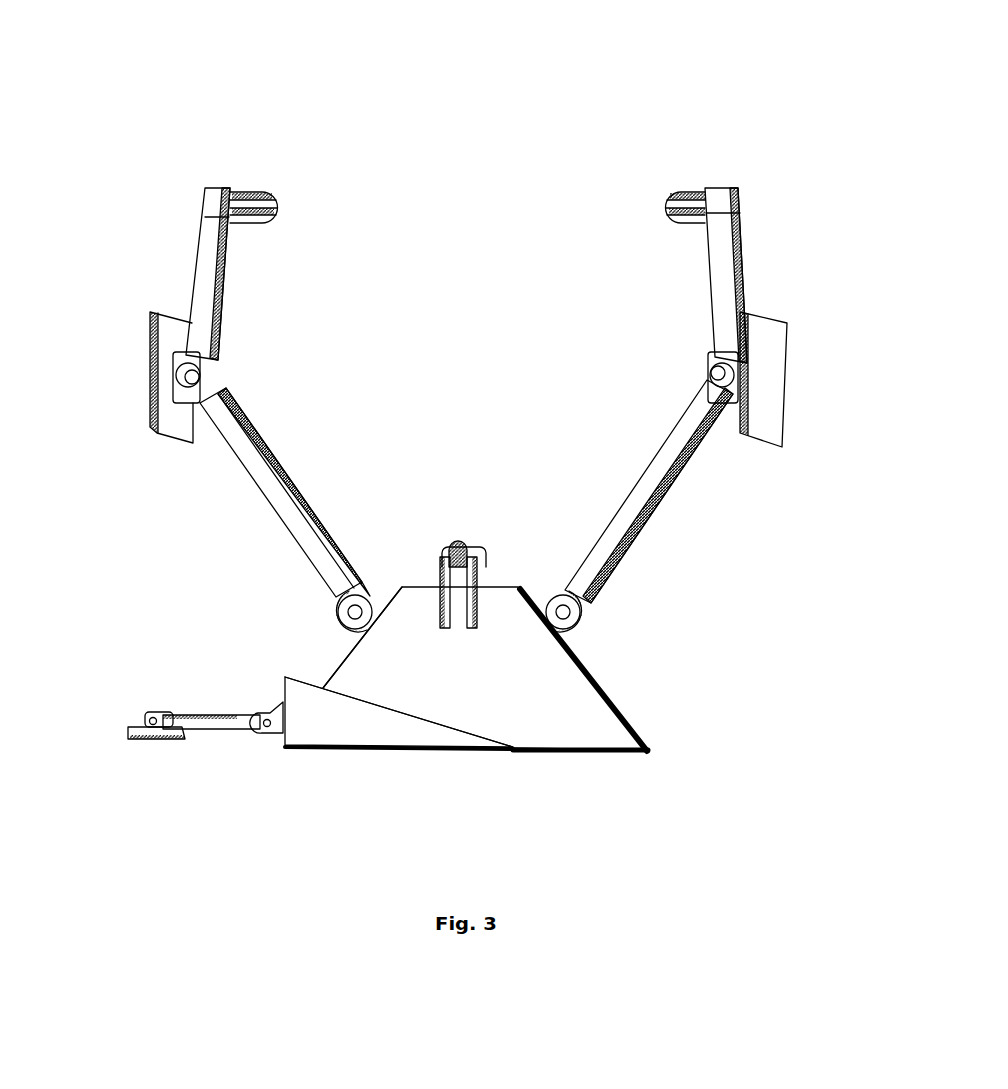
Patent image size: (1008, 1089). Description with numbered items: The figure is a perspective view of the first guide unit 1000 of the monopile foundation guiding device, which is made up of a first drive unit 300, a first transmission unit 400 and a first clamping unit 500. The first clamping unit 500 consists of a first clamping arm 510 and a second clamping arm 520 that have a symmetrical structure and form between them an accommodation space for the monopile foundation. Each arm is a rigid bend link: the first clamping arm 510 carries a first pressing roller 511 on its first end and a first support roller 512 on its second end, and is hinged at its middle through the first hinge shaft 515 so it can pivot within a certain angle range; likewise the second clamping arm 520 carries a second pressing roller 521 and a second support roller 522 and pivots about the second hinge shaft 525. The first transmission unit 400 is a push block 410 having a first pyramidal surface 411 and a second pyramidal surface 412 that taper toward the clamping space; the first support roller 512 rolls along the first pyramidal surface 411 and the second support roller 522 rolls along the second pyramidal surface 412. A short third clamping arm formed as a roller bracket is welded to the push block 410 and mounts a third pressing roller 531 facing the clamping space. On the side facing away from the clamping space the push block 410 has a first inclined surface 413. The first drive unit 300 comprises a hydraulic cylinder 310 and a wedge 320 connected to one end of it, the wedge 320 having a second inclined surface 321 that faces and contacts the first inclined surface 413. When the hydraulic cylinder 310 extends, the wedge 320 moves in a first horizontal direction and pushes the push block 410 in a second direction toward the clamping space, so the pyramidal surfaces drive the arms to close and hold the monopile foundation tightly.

The first guide unit 1000 is at (497, 27).
The first clamping unit 500 is at (460, 252).
The first clamping arm 510 is at (203, 252).
The first pressing roller 511 is at (262, 192).
The first support roller 512 is at (366, 600).
The first hinge shaft 515 is at (184, 378).
The second clamping arm 520 is at (660, 487).
The second pressing roller 521 is at (682, 200).
The second support roller 522 is at (590, 620).
The second hinge shaft 525 is at (742, 380).
The third pressing roller 531 is at (462, 548).
The first transmission unit 400 is at (658, 762).
The push block 410 is at (547, 715).
The first pyramidal surface 411 is at (348, 650).
The second pyramidal surface 412 is at (605, 705).
The first inclined surface 413 is at (516, 750).
The first drive unit 300 is at (252, 742).
The hydraulic cylinder 310 is at (203, 712).
The wedge 320 is at (325, 717).
The second inclined surface 321 is at (293, 675).